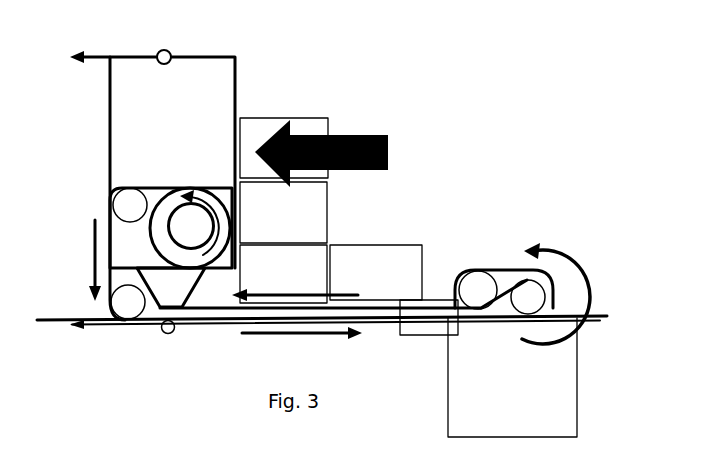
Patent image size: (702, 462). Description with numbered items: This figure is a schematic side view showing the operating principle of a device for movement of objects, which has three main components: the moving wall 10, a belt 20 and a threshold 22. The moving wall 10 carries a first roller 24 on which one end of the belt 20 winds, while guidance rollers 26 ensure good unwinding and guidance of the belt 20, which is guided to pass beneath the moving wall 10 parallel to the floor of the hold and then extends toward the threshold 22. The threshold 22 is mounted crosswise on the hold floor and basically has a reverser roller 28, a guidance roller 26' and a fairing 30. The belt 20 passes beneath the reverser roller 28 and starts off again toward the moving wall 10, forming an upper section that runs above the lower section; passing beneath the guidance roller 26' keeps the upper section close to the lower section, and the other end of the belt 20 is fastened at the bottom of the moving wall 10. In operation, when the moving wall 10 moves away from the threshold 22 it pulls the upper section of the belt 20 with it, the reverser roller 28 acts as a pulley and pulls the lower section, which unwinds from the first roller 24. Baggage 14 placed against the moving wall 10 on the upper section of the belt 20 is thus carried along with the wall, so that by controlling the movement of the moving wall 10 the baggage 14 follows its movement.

The moving wall 10 is at (185, 56).
The baggage 14 is at (310, 213).
The belt 20 is at (168, 187).
The threshold 22 is at (517, 250).
The first roller 24 is at (200, 213).
The guidance rollers 26 is at (106, 281).
The guidance roller 26' is at (484, 263).
The reverser roller 28 is at (512, 321).
The fairing 30 is at (555, 272).